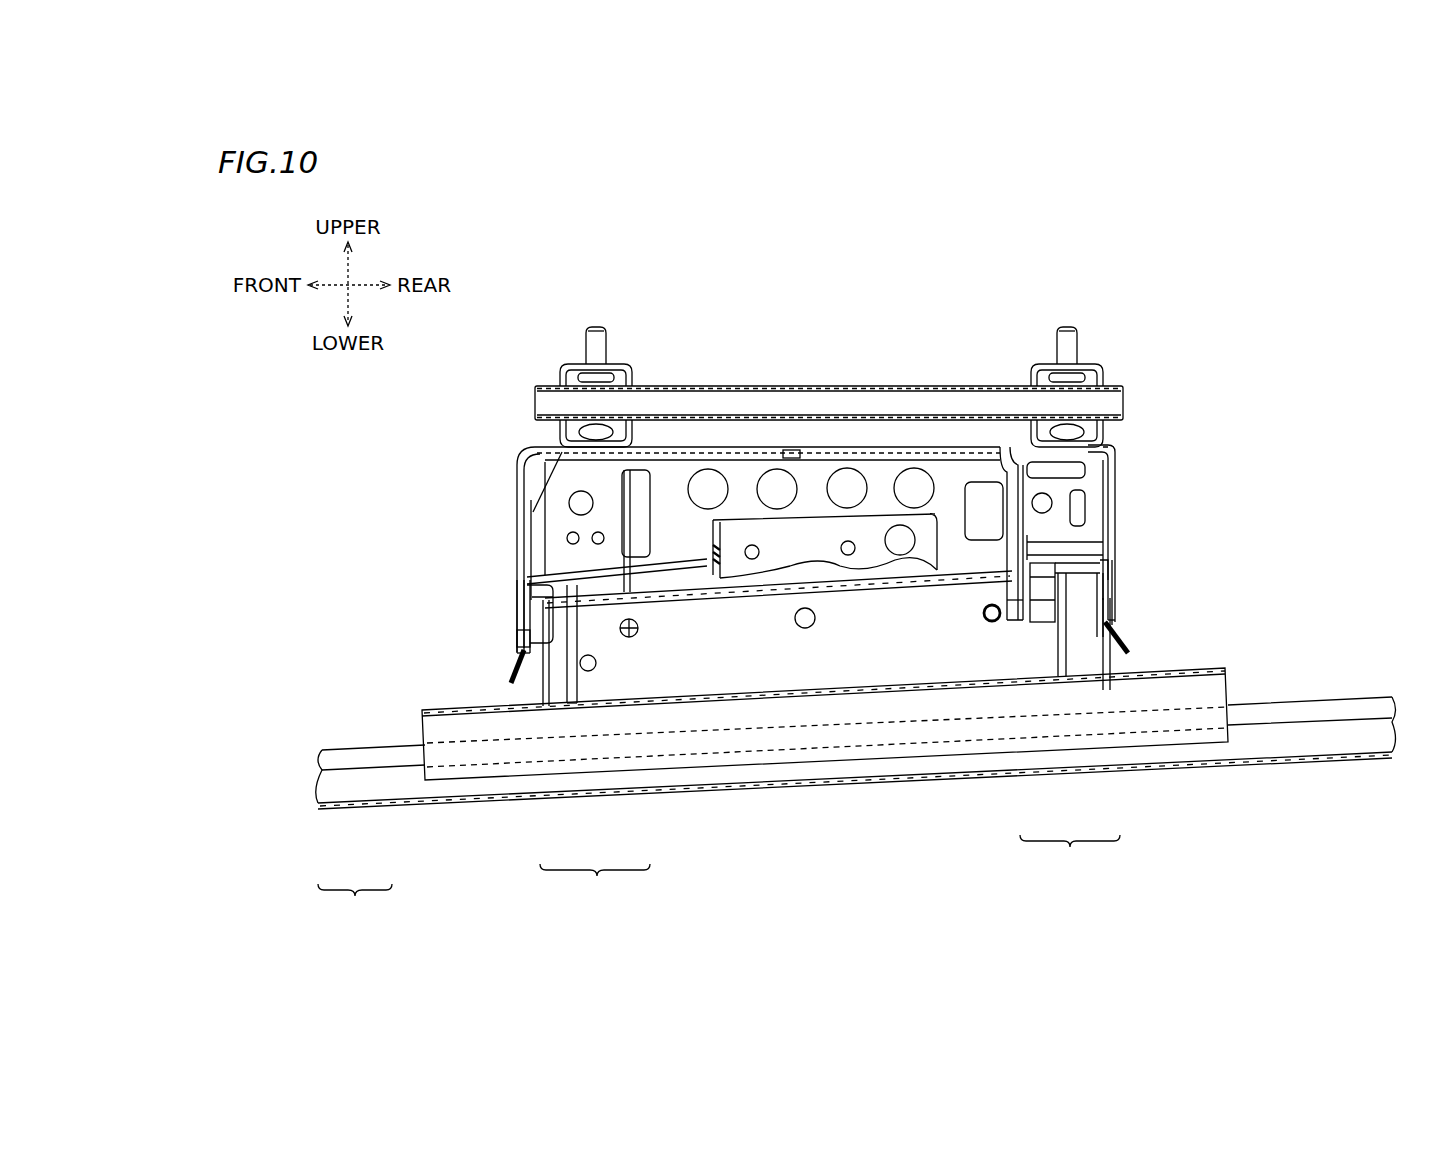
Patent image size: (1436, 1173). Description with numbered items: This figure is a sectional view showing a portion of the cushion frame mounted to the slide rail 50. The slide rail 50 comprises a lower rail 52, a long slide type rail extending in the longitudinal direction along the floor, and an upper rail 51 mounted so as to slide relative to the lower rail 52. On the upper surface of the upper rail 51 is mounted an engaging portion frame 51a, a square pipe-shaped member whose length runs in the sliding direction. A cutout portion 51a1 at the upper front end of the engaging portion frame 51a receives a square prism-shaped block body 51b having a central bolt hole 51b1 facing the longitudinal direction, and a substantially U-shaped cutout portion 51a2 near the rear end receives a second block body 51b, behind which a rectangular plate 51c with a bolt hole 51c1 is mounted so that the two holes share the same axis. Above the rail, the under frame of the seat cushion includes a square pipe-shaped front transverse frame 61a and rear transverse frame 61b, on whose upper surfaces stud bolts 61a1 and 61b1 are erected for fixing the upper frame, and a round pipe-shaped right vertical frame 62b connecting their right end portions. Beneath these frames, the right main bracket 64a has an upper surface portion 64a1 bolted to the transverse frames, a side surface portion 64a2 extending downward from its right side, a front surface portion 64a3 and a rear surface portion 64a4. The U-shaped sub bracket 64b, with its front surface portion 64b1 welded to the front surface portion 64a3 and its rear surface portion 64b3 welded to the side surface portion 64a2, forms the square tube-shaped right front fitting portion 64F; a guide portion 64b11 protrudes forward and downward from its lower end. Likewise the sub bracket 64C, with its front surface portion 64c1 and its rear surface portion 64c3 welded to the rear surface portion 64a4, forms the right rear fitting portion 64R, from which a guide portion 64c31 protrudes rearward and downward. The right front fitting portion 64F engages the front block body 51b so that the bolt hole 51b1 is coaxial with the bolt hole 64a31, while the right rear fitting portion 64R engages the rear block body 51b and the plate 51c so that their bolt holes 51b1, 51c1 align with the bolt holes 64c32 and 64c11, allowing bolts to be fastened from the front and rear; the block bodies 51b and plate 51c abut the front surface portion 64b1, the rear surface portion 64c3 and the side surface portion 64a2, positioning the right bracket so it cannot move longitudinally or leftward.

The slide rail 50 is at (855, 820).
The upper rail 51 is at (425, 748).
The engaging portion frame 51a is at (785, 655).
The cutout portion 51a1 is at (517, 637).
The cutout portion 51a2 is at (990, 623).
The block body 51b is at (545, 650).
The bolt hole 51b1 is at (1006, 540).
The plate 51c is at (1112, 650).
The bolt hole 51c1 is at (1118, 570).
The lower rail 52 is at (340, 790).
The front transverse frame 61a is at (566, 370).
The stud bolt 61a1 is at (594, 327).
The rear transverse frame 61b is at (1092, 368).
The stud bolt 61b1 is at (1066, 327).
The right vertical frame 62b is at (778, 386).
The right main bracket 64a is at (877, 470).
The upper surface portion 64a1 is at (718, 440).
The side surface portion 64a2 is at (822, 470).
The front surface portion 64a3 is at (533, 512).
The bolt hole 64a31 is at (517, 622).
The rear surface portion 64a4 is at (1118, 505).
The right front fitting portion 64F is at (477, 521).
The right rear fitting portion 64R is at (1144, 464).
The sub bracket 64b is at (595, 801).
The front surface portion 64b1 is at (568, 705).
The rear surface portion 64b3 is at (627, 595).
The guide portion 64b11 is at (512, 668).
The sub bracket 64C is at (1060, 657).
The front surface portion 64c1 is at (1048, 640).
The rear surface portion 64c3 is at (1088, 640).
The bolt hole 64c11 is at (1007, 595).
The guide portion 64c31 is at (1128, 634).
The bolt hole 64c32 is at (1122, 592).